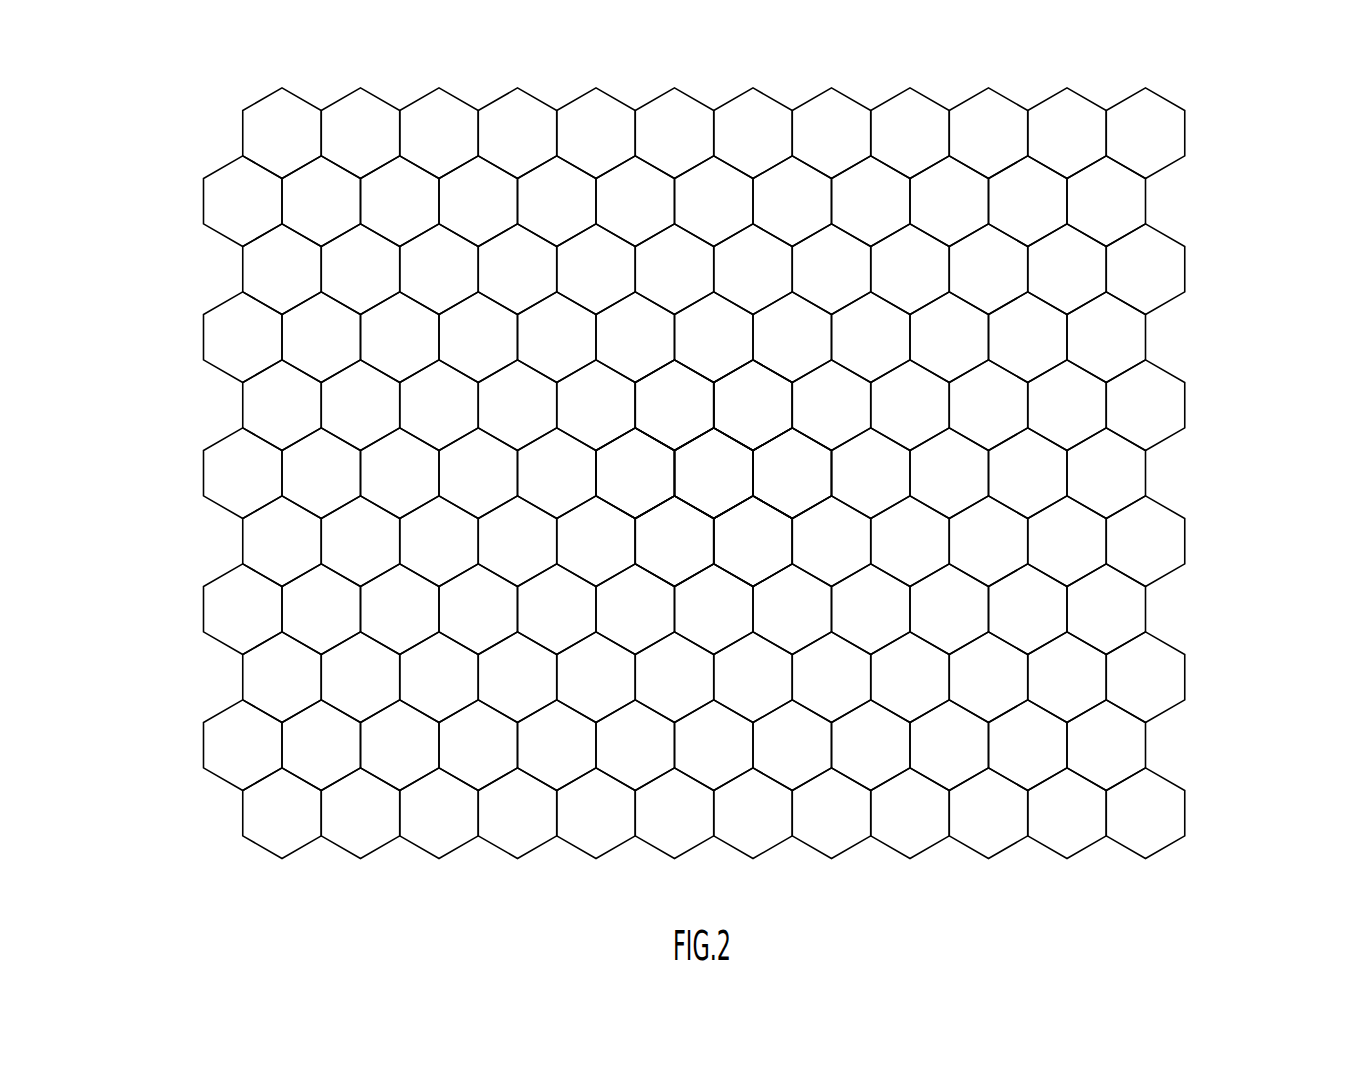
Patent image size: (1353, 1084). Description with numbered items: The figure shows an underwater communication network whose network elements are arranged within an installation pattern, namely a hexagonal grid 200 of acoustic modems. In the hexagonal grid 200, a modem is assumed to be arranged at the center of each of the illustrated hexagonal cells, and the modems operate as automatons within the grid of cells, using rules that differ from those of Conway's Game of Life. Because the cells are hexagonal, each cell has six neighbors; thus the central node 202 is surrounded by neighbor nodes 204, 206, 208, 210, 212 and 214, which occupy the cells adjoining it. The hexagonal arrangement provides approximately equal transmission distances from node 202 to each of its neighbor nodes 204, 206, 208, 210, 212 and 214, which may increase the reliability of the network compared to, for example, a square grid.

The hexagonal grid 200 is at (134, 132).
The node 202 is at (735, 488).
The neighbor node 204 is at (784, 450).
The neighbor node 206 is at (758, 400).
The neighbor node 208 is at (667, 400).
The neighbor node 210 is at (640, 478).
The neighbor node 212 is at (665, 538).
The neighbor node 214 is at (757, 533).